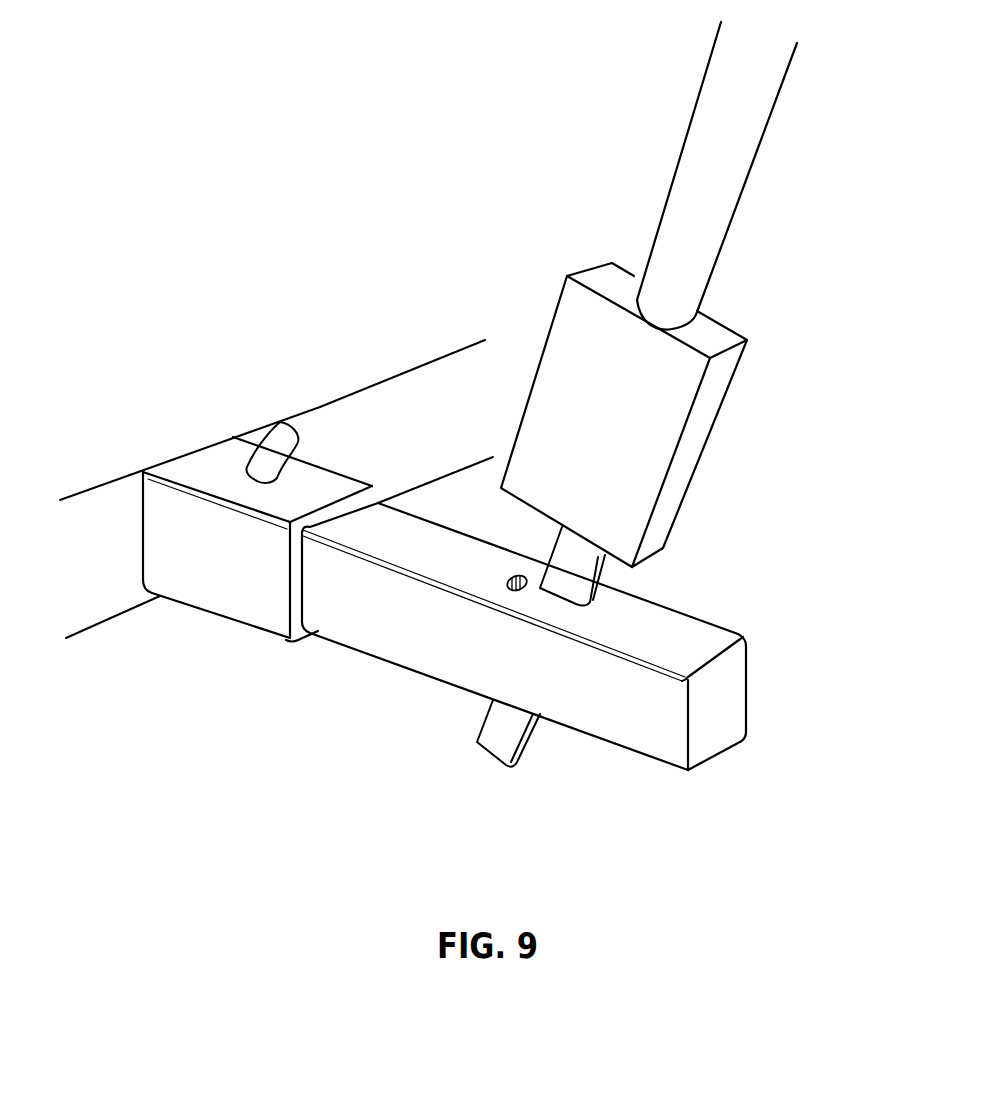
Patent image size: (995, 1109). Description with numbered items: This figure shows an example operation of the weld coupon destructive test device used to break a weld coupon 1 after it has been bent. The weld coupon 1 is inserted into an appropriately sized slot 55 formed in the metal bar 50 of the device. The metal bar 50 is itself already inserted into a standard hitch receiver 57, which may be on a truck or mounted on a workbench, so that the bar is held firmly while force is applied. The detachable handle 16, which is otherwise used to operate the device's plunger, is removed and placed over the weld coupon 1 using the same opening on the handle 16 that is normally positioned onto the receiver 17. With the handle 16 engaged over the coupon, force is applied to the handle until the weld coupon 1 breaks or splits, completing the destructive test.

The weld coupon 1 is at (497, 760).
The handle 16 is at (735, 202).
The receiver 17 is at (700, 457).
The metal bar 50 is at (410, 618).
The slot 55 is at (513, 578).
The hitch receiver 57 is at (343, 473).